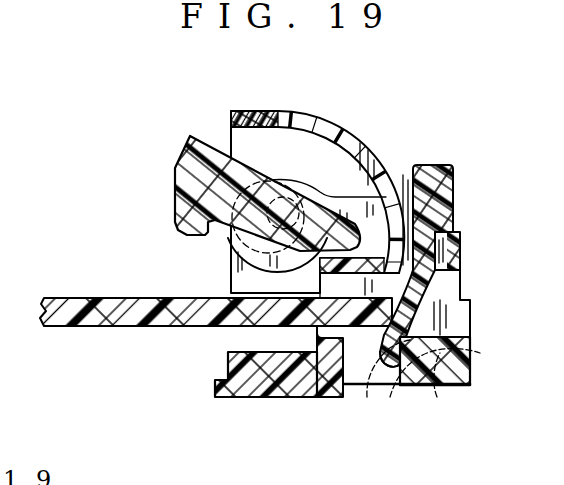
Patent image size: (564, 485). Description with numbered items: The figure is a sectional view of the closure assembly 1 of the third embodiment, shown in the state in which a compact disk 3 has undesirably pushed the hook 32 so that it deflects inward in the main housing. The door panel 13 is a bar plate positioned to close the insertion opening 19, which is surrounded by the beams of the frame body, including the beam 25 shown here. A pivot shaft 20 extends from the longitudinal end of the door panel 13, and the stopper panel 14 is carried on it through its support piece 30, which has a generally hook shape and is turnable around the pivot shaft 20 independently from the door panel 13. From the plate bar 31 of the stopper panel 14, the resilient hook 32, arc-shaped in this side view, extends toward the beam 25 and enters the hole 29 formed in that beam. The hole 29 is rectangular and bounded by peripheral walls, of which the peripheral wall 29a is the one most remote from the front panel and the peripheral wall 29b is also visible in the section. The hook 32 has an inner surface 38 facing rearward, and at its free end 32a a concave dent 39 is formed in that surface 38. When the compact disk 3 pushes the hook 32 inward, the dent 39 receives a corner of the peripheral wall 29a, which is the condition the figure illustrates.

The disk drive apparatus 1 is at (428, 121).
The compact disk 3 is at (110, 305).
The door panel 13 is at (214, 134).
The stopper panel 14 is at (436, 159).
The insertion opening 19 is at (447, 318).
The pivot shaft 20 is at (266, 222).
The beam 25 is at (293, 383).
The hole 29 is at (385, 385).
The peripheral wall 29a is at (437, 386).
The peripheral wall 29b is at (328, 385).
The support piece 30 is at (337, 197).
The plate bar 31 is at (454, 183).
The hook 32 is at (443, 292).
The free end 32a is at (368, 382).
The surface 38 is at (448, 273).
The dent 39 is at (455, 352).